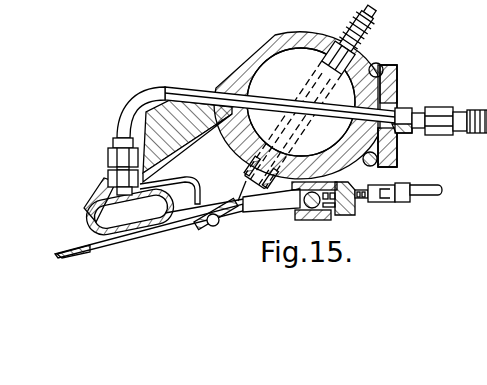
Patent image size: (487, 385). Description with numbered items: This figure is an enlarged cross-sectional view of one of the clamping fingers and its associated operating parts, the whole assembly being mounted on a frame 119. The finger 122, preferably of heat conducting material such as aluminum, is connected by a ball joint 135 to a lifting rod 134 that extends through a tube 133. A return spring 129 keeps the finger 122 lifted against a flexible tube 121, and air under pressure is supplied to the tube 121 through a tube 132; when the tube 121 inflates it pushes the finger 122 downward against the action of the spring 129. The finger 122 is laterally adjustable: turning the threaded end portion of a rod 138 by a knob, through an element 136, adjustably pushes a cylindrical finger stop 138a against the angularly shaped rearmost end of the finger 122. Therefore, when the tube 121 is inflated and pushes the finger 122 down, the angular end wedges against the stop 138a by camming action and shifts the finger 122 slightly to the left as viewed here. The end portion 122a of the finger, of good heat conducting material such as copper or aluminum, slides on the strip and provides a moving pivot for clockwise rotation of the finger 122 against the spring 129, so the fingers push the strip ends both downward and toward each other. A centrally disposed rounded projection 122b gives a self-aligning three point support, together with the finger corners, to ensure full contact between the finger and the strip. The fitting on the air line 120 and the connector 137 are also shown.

The frame 119 is at (267, 33).
The fuel hose 120 is at (150, 124).
The flexible tube 121 is at (97, 192).
The finger 122 is at (74, 246).
The end portion 122a is at (80, 253).
The rounded projection 122b is at (288, 213).
The return spring 129 is at (373, 37).
The tube 132 is at (163, 86).
The tube 133 is at (370, 64).
The lifting rod 134 is at (297, 125).
The ball joint 135 is at (215, 227).
The element 136 is at (355, 216).
The connector 137 is at (407, 202).
The rod 138 is at (437, 184).
The finger stop 138a is at (294, 214).